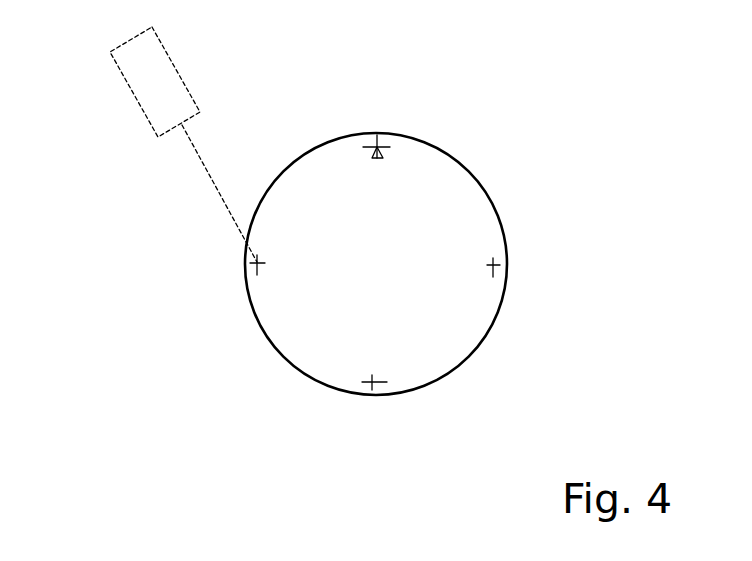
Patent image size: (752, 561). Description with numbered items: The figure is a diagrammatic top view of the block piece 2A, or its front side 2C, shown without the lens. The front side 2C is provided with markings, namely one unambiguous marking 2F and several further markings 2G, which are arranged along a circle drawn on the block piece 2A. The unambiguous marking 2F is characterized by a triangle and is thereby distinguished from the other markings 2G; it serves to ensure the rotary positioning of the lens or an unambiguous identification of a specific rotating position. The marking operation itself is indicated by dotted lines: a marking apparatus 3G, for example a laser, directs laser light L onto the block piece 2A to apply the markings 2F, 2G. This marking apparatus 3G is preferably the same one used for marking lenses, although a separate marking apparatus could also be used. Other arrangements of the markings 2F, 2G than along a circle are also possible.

The block piece 2A is at (500, 200).
The unambiguous marking 2F is at (378, 150).
The markings 2G is at (256, 264).
The front side 2C is at (437, 328).
The marking apparatus 3G is at (157, 100).
The laser light L is at (220, 195).